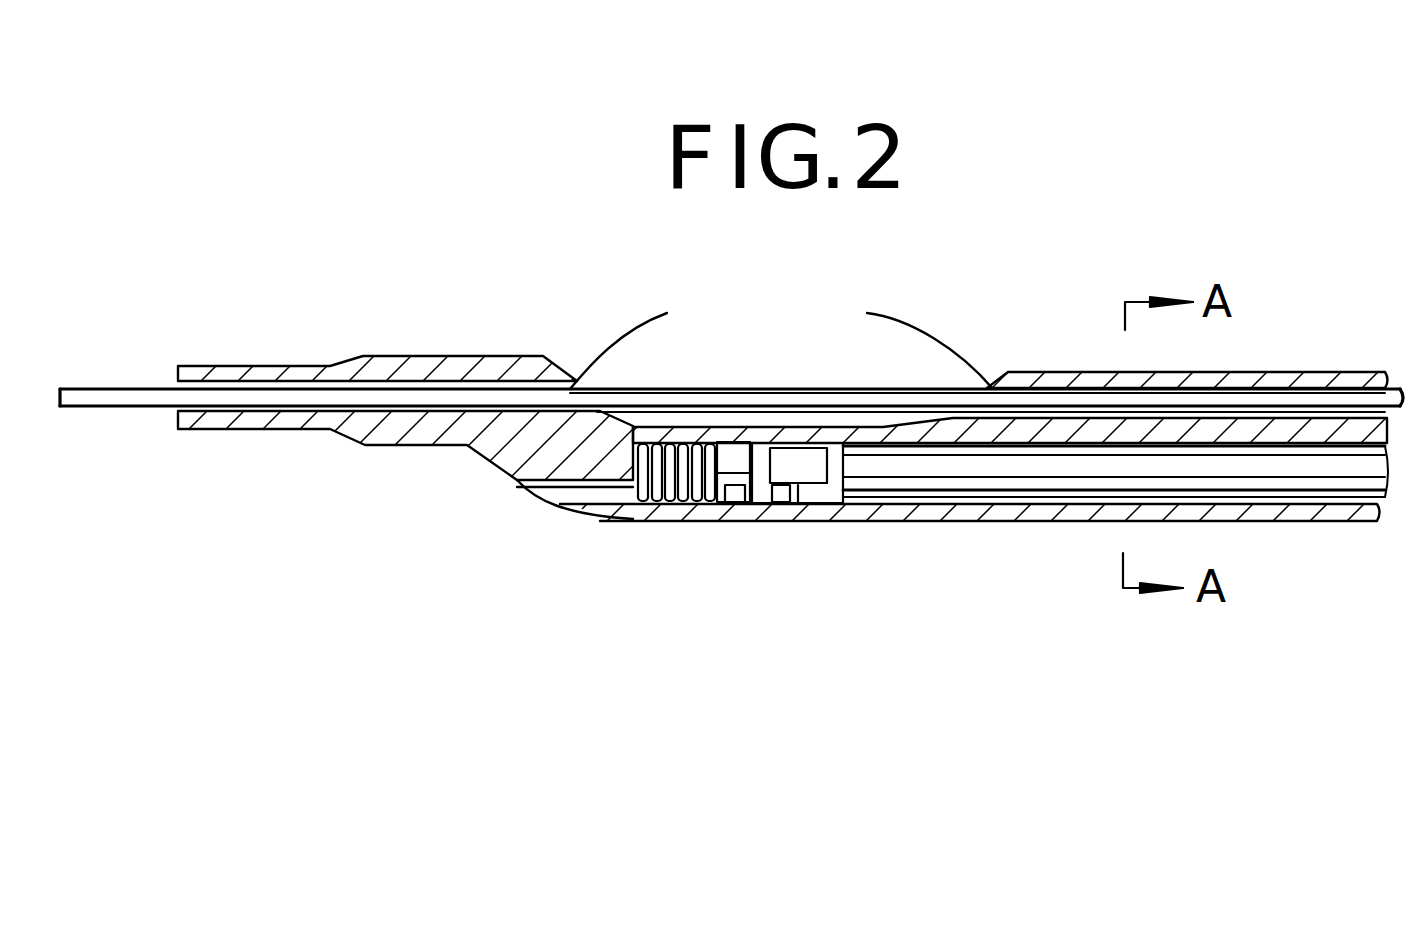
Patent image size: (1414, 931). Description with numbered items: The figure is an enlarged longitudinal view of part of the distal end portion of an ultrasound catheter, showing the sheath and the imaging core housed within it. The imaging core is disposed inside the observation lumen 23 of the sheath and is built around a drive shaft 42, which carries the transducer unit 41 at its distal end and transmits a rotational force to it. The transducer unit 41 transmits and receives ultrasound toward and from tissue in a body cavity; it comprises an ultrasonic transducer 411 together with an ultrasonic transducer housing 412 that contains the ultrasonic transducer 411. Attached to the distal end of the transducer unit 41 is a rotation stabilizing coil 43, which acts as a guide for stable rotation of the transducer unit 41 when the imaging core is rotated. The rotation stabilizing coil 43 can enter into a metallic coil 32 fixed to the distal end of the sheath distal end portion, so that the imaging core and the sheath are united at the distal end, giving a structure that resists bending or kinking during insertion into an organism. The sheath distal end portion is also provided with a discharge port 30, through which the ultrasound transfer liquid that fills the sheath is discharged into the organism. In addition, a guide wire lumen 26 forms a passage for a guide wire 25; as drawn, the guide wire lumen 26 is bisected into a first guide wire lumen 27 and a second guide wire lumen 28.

The observation lumen 23 is at (1333, 503).
The guide wire 25 is at (124, 389).
The guide wire lumen 26 is at (977, 321).
The first guide wire lumen 27 is at (649, 341).
The second guide wire lumen 28 is at (904, 341).
The discharge port 30 is at (543, 495).
The metallic coil 32 is at (640, 502).
The transducer unit 41 is at (795, 555).
The ultrasonic transducer 411 is at (810, 482).
The ultrasonic transducer housing 412 is at (775, 492).
The drive shaft 42 is at (1018, 480).
The rotation stabilizing coil 43 is at (738, 500).